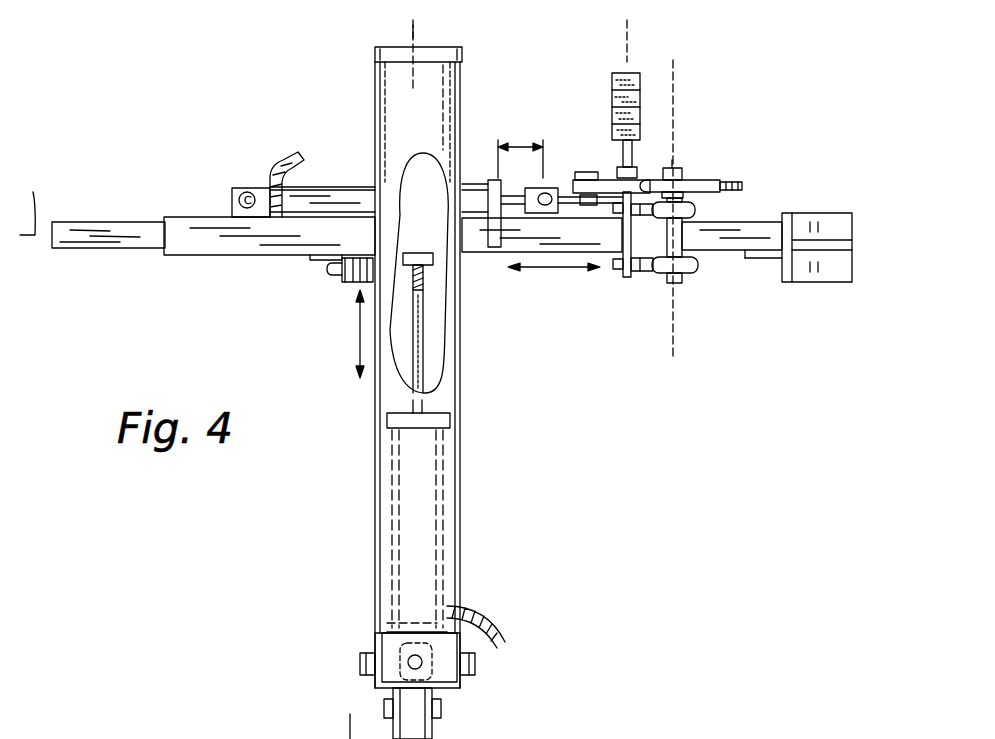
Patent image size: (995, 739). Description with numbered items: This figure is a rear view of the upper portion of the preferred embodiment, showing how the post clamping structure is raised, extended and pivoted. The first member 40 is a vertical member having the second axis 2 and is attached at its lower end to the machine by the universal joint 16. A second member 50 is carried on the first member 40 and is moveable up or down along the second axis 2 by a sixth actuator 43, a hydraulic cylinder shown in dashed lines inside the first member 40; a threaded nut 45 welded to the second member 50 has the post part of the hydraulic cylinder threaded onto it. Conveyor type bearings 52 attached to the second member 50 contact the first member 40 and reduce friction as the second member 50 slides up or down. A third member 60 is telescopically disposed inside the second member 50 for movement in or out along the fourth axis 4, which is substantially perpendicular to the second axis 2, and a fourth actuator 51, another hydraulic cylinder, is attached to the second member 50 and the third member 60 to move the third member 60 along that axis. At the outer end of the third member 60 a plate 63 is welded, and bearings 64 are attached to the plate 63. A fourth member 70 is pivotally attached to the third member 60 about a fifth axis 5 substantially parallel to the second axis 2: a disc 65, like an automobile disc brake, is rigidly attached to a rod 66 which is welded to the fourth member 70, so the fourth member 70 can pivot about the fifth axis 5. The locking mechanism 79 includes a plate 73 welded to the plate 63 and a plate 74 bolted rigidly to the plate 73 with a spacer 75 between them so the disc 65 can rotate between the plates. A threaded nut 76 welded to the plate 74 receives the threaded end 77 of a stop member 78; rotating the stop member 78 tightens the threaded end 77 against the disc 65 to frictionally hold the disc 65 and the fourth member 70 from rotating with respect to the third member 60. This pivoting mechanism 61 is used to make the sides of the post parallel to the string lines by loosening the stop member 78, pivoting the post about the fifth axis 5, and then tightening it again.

The second axis 2 is at (410, 30).
The fourth axis 4 is at (39, 203).
The fifth axis 5 is at (625, 42).
The universal joint 16 is at (457, 708).
The first member 40 is at (393, 93).
The sixth actuator 43 is at (421, 370).
The threaded nut 45 is at (432, 261).
The second member 50 is at (181, 258).
The fourth actuator 51 is at (345, 190).
The conveyor type bearings 52 is at (357, 281).
The third member 60 is at (100, 228).
The mechanism 61 is at (770, 145).
The plate 63 is at (628, 285).
The bearings 64 is at (700, 208).
The disc 65 is at (735, 185).
The rod 66 is at (684, 168).
The fourth member 70 is at (723, 240).
The plate 73 is at (608, 197).
The plate 74 is at (541, 133).
The spacer 75 is at (543, 170).
The threaded nut 76 is at (632, 168).
The threaded end 77 is at (577, 176).
The stop member 78 is at (636, 80).
The locking mechanism 79 is at (595, 145).